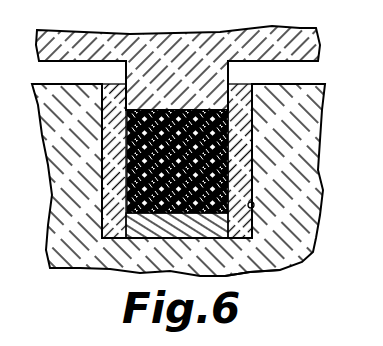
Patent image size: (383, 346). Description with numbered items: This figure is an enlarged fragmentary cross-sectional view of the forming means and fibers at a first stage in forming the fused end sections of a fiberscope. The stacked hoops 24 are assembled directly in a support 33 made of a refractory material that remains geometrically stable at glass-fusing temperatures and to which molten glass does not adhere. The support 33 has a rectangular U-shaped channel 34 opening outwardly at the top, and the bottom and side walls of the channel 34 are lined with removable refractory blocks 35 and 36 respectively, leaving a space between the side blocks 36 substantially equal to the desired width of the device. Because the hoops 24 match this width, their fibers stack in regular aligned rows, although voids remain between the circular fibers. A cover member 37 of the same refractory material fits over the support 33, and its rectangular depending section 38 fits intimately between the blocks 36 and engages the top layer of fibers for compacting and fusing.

The hoops 24 is at (230, 155).
The support 33 is at (300, 251).
The channel 34 is at (254, 206).
The bottom block 35 is at (233, 275).
The side blocks 36 is at (110, 184).
The cover member 37 is at (222, 35).
The depending section 38 is at (228, 78).